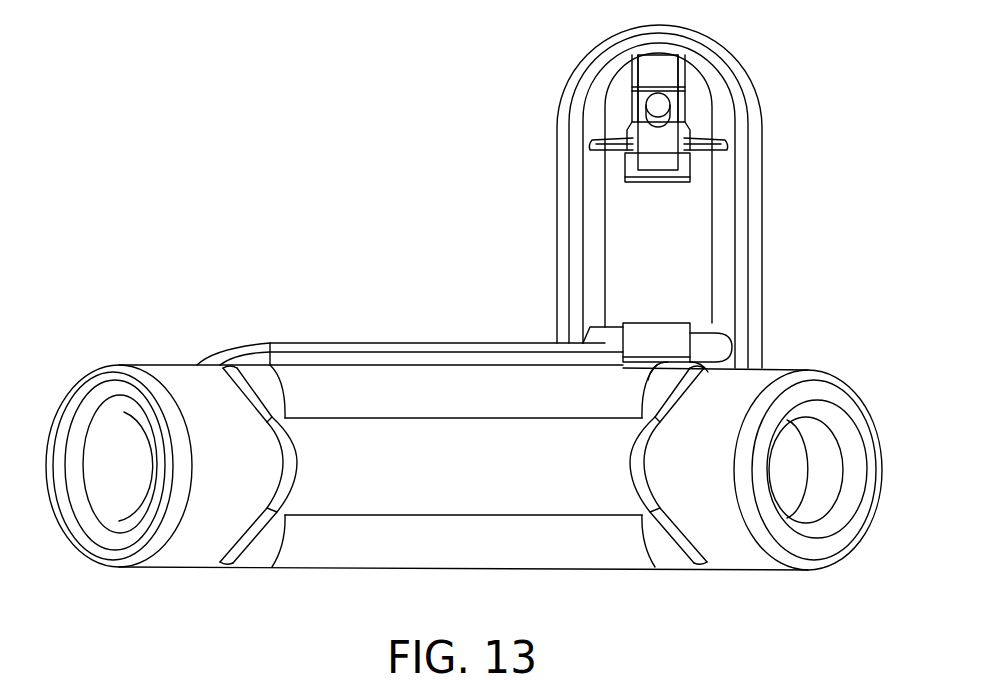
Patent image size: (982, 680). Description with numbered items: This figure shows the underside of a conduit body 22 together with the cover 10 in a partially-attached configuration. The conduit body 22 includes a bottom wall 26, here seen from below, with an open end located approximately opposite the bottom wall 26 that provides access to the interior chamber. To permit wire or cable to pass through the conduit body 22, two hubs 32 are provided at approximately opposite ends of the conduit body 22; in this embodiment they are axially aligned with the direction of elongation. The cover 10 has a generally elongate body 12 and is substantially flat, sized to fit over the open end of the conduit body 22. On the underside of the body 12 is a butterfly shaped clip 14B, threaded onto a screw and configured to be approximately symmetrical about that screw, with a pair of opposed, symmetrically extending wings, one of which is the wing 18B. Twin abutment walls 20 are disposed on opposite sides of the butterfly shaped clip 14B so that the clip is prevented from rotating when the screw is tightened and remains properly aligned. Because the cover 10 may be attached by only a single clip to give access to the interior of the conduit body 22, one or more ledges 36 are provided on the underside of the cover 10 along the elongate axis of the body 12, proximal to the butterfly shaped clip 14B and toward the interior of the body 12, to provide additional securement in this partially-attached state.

The cover 10 is at (432, 168).
The elongate body 12 is at (687, 262).
The butterfly shaped clip 14B is at (668, 98).
The wing 18B is at (653, 67).
The abutment wall 20 is at (573, 107).
The conduit body 22 is at (582, 573).
The bottom wall 26 is at (532, 483).
The hub 32 is at (103, 480).
The ledge 36 is at (647, 180).